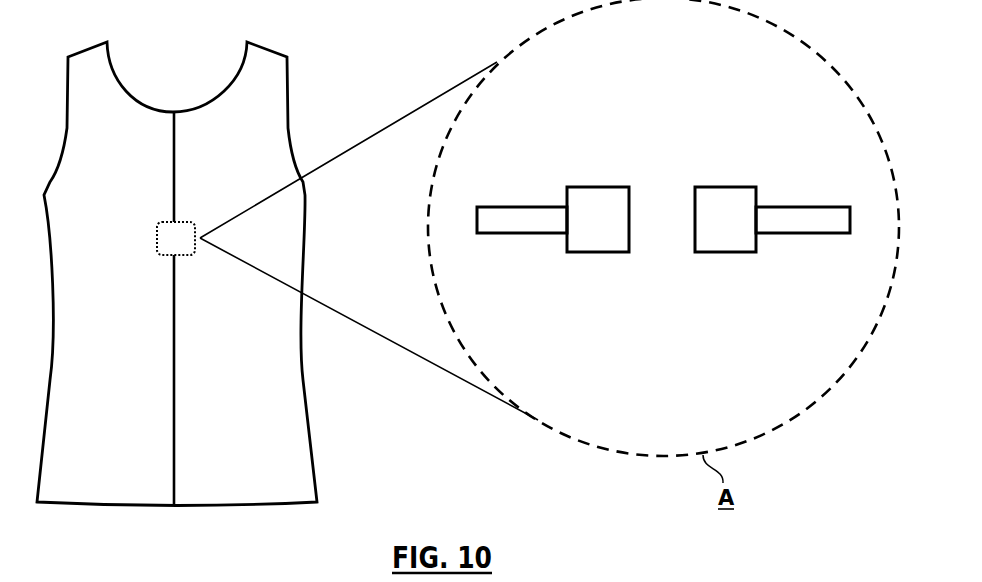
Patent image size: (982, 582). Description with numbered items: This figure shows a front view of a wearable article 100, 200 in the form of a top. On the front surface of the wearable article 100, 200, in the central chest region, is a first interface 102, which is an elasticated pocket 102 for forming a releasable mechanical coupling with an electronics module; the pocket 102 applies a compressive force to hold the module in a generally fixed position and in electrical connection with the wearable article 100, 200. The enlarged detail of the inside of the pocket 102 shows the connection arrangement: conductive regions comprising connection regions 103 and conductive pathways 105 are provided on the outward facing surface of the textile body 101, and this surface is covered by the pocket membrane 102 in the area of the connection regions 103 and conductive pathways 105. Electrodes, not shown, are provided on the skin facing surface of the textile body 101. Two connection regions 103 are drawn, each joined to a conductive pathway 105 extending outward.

The wearable article 100 is at (252, 274).
The wearable article 200 is at (296, 409).
The textile body 101 is at (659, 335).
The interface 102 is at (158, 226).
The connection region 103 is at (580, 247).
The conductive pathway 105 is at (522, 234).